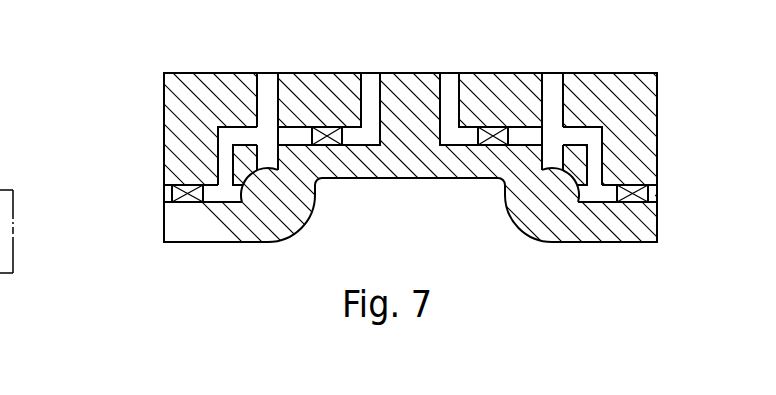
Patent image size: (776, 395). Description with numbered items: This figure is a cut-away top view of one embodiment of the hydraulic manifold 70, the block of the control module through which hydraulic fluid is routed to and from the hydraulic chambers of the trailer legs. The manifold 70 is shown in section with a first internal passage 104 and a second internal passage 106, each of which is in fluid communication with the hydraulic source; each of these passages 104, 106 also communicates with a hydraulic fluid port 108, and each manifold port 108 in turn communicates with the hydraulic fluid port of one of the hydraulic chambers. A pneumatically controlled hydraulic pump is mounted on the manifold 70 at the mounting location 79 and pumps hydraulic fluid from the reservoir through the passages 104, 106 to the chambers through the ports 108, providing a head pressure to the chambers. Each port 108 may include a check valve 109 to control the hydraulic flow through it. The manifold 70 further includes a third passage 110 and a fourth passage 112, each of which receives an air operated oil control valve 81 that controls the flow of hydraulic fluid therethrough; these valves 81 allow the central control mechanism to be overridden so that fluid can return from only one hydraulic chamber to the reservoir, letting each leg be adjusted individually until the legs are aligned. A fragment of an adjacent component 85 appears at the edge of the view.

The hydraulic manifold 70 is at (160, 98).
The hydraulic pump mounting location 79 is at (267, 208).
The air operated oil control valve 81 is at (332, 145).
The adjacent component 85 is at (11, 259).
The first internal passage 104 is at (268, 78).
The second internal passage 106 is at (555, 78).
The hydraulic fluid port 108 is at (171, 194).
The check valve 109 is at (166, 169).
The third passage 110 is at (368, 78).
The fourth passage 112 is at (450, 80).